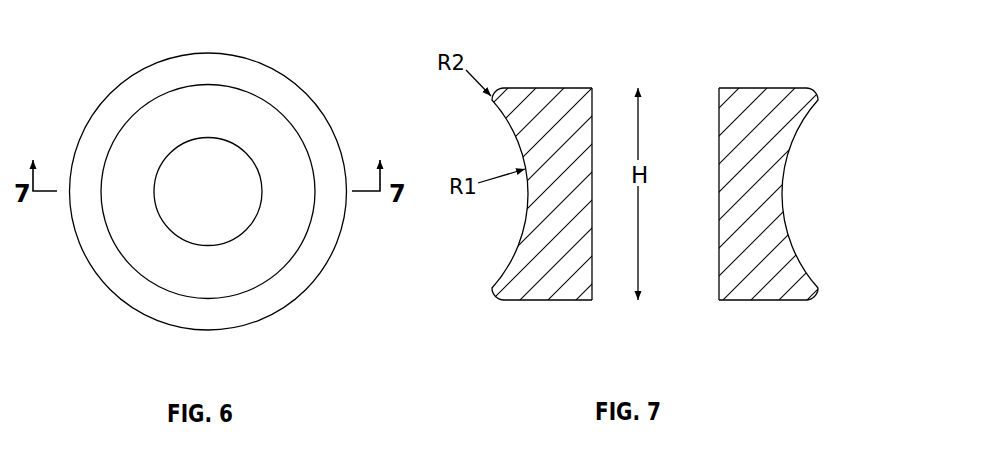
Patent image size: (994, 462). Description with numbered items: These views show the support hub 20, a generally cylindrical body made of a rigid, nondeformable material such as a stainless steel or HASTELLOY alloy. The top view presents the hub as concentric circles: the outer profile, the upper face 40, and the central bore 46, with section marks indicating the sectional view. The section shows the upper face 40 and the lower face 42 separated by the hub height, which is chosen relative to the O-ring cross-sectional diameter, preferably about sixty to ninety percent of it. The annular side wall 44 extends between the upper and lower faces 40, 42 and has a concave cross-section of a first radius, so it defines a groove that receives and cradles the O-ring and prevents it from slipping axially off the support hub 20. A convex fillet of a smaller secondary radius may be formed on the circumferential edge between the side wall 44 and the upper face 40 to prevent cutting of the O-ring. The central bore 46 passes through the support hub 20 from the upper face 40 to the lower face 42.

In FIG. 6, the support hub 20 is at (273, 51).
In FIG. 7, the support hub 20 is at (703, 62).
In FIG. 6, the upper face 40 is at (257, 127).
In FIG. 7, the upper face 40 is at (778, 88).
In FIG. 7, the lower face 42 is at (742, 301).
In FIG. 7, the annular side wall 44 is at (782, 207).
In FIG. 6, the central bore 46 is at (250, 160).
In FIG. 7, the central bore 46 is at (718, 136).